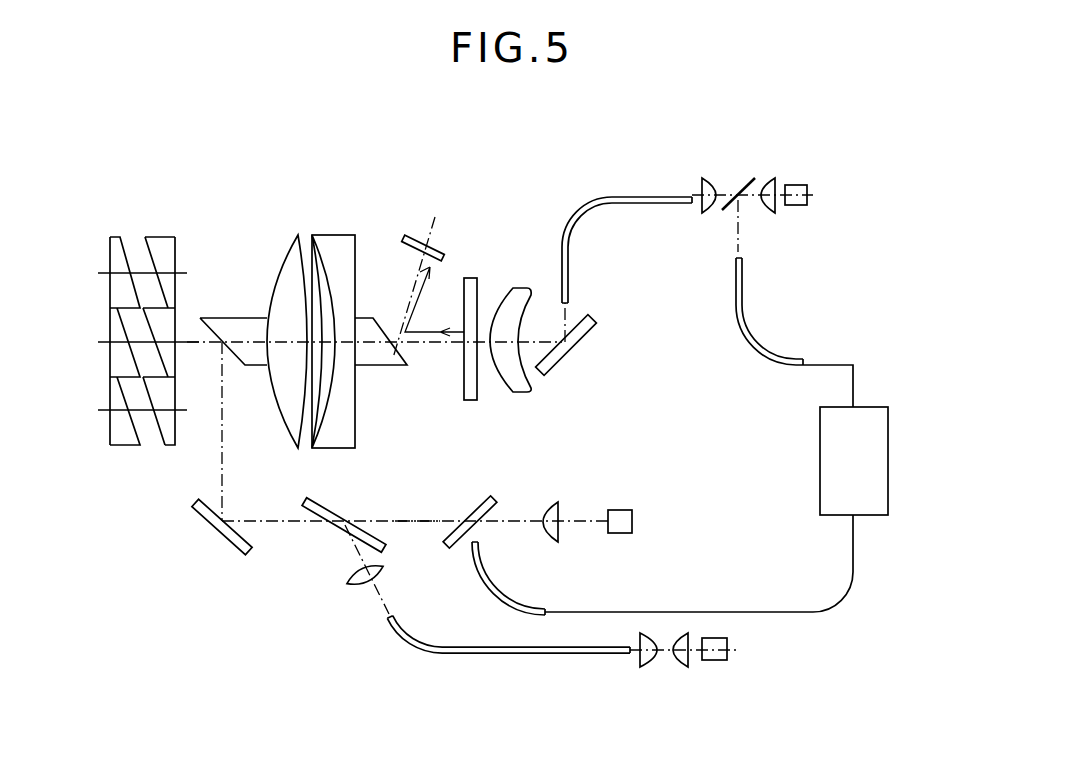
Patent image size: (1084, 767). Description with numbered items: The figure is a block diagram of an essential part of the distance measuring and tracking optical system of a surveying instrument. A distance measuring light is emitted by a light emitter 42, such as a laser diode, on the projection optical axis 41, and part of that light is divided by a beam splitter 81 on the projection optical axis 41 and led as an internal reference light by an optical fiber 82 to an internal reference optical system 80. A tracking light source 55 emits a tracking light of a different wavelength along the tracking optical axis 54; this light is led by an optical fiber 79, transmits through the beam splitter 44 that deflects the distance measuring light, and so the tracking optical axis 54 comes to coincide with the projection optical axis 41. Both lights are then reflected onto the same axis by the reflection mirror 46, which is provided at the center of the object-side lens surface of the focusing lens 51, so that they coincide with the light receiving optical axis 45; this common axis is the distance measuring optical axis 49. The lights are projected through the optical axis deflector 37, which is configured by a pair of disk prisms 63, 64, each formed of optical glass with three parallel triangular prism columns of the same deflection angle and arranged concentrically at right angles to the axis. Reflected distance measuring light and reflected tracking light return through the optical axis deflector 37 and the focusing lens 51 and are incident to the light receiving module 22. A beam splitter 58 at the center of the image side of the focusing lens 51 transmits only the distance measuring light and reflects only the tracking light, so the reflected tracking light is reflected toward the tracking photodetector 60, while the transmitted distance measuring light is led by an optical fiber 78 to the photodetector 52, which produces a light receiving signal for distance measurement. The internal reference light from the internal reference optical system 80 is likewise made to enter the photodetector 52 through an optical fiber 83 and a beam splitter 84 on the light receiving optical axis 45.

The optical axis deflector 37 is at (140, 202).
The disk prism 64 is at (120, 447).
The disk prism 63 is at (170, 447).
The distance measuring optical axis 49 is at (189, 336).
The reflection mirror 46 is at (250, 368).
The focusing lens 51 is at (309, 219).
The beam splitter 58 is at (411, 362).
The tracking photodetector 60 is at (406, 242).
The light receiving module 22 is at (524, 265).
The optical fiber 78 is at (603, 206).
The light receiving optical axis 45 is at (729, 188).
The beam splitter 84 is at (745, 175).
The photodetector 52 is at (790, 184).
The optical fiber 83 is at (738, 330).
The internal reference optical system 80 is at (819, 450).
The projection optical axis 41 is at (413, 519).
The beam splitter 44 is at (322, 504).
The beam splitter 81 is at (491, 500).
The light emitter 42 is at (628, 509).
The optical fiber 82 is at (489, 594).
The tracking optical axis 54 is at (348, 554).
The optical fiber 79 is at (482, 656).
The tracking light source 55 is at (710, 664).